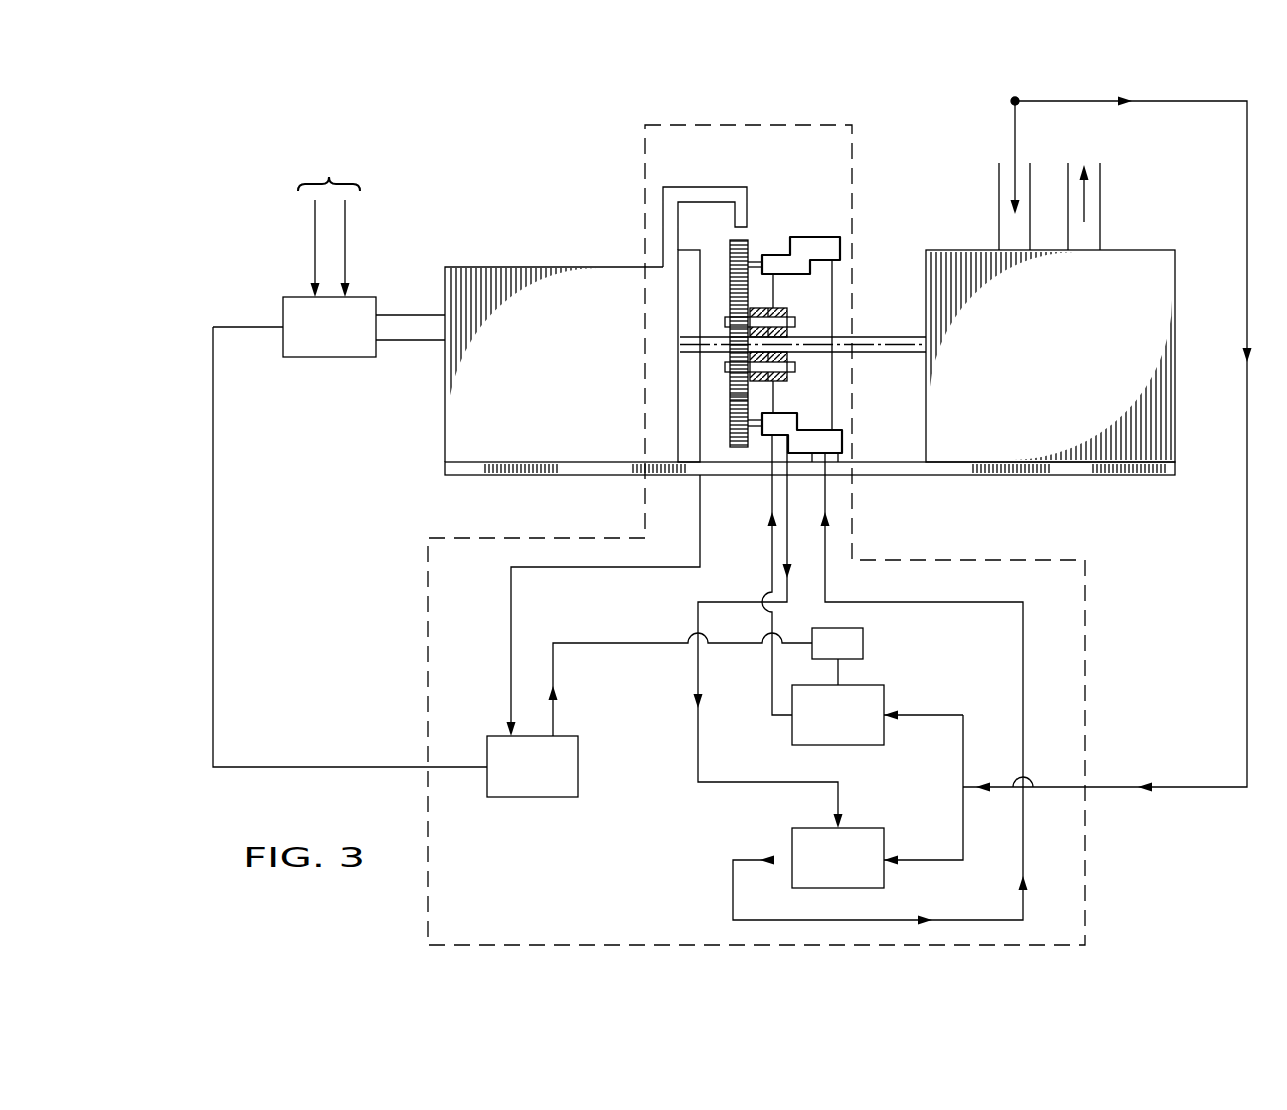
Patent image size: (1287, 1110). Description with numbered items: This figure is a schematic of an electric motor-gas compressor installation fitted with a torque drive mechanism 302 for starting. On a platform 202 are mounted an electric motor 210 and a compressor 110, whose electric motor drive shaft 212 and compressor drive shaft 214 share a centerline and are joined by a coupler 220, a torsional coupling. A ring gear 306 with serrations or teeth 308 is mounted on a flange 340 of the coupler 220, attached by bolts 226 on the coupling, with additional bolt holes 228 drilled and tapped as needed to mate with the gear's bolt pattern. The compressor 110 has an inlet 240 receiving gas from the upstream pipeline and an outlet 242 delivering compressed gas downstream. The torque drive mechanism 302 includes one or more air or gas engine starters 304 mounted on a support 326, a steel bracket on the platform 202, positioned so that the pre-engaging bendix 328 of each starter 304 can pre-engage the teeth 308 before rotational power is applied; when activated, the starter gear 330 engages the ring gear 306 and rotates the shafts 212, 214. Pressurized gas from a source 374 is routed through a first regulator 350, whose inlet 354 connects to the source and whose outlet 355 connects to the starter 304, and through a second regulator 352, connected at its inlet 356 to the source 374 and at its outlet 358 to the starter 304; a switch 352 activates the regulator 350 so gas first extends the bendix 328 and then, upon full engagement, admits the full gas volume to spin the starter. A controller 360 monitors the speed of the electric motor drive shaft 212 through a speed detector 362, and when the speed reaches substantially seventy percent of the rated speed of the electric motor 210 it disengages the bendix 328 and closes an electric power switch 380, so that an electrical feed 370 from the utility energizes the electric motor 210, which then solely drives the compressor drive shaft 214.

The compressor 110 is at (965, 226).
The platform 202 is at (1020, 470).
The electric motor 210 is at (505, 245).
The electric motor drive shaft 212 is at (690, 345).
The compressor drive shaft 214 is at (886, 350).
The coupler 220 is at (797, 296).
The bolts 226 is at (727, 320).
The bolt holes 228 is at (735, 395).
The inlet 240 is at (1000, 192).
The outlet 242 is at (1100, 192).
The torque drive mechanism 302 is at (1084, 857).
The air or gas engine starter 304 is at (832, 242).
The ring gear 306 is at (732, 300).
The teeth 308 is at (730, 245).
The support 326 is at (818, 313).
The pre-engaging bendix 328 is at (762, 440).
The starter gear 330 is at (735, 428).
The flange 340 is at (757, 305).
The regulator 350 is at (838, 745).
The switch 352 is at (863, 643).
The regulator inlet 354 is at (968, 690).
The regulator outlet 355 is at (772, 697).
The inlet 356 is at (922, 862).
The outlet 358 is at (733, 895).
The controller 360 is at (530, 797).
The speed detector 362 is at (712, 197).
The electrical feed 370 is at (328, 172).
The source of pressurized fluid 374 is at (1011, 101).
The electric power switch 380 is at (330, 357).